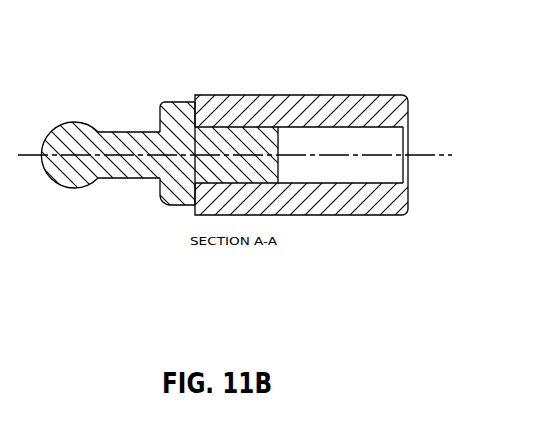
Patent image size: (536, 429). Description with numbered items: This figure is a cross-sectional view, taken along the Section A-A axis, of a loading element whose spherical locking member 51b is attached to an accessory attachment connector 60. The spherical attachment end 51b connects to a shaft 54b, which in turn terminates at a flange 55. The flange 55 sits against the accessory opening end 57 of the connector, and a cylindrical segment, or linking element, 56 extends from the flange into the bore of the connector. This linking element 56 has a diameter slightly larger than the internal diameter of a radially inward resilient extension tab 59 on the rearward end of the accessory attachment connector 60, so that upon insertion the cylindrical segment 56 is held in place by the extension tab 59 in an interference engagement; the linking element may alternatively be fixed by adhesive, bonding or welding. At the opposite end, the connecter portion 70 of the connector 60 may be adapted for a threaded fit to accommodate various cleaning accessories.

The spherical locking member 51b is at (70, 106).
The shaft 54b is at (109, 186).
The flange 55 is at (171, 212).
The cylindrical segment (linking element) 56 is at (268, 174).
The accessory opening end 57 is at (185, 96).
The resilient extension tab 59 is at (203, 119).
The accessory attachment connector 60 is at (331, 90).
The connecter portion 70 is at (416, 145).